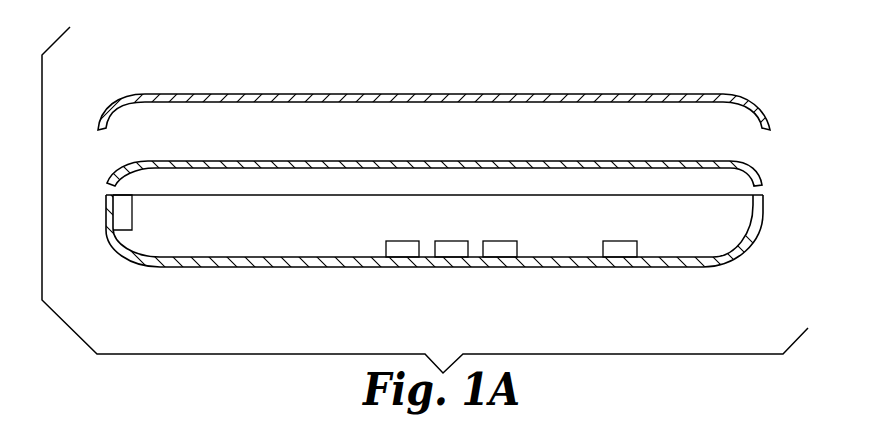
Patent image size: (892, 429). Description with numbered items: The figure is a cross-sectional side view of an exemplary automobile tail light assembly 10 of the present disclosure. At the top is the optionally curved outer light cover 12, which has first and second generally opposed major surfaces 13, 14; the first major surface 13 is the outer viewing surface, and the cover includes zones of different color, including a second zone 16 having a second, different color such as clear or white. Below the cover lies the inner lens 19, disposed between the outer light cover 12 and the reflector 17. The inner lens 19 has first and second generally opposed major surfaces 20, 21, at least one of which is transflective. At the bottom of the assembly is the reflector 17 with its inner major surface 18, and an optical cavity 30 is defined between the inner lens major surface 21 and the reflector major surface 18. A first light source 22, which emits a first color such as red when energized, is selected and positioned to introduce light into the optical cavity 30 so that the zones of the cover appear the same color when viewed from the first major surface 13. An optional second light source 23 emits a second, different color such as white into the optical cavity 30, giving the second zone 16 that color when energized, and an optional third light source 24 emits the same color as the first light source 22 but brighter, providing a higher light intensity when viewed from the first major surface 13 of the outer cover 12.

The automobile tail light assembly 10 is at (709, 56).
The outer light cover 12 is at (490, 90).
The first major surface 13 is at (345, 93).
The second major surface 14 is at (250, 99).
The second zone 16 is at (611, 95).
The inner lens 19 is at (607, 165).
The first major surface 20 is at (500, 160).
The second major surface 21 is at (397, 172).
The first light source 22 is at (125, 214).
The second light source 23 is at (623, 250).
The third light source 24 is at (493, 250).
The reflector 17 is at (195, 266).
The inner major surface 18 is at (250, 257).
The optical cavity 30 is at (153, 242).